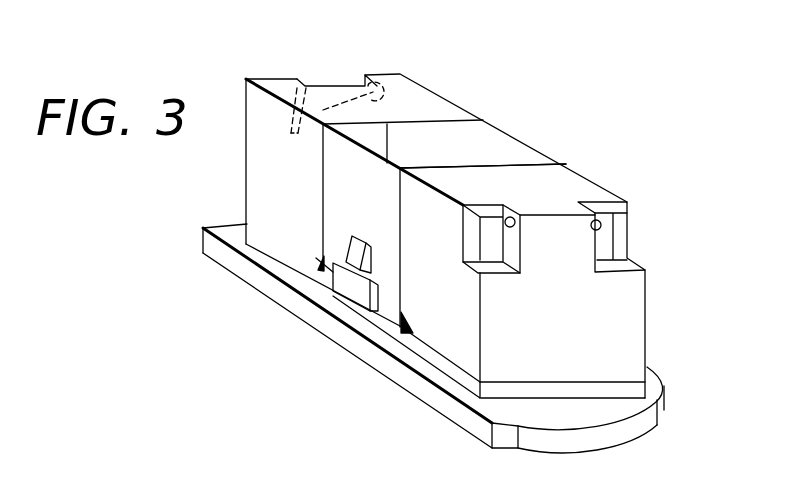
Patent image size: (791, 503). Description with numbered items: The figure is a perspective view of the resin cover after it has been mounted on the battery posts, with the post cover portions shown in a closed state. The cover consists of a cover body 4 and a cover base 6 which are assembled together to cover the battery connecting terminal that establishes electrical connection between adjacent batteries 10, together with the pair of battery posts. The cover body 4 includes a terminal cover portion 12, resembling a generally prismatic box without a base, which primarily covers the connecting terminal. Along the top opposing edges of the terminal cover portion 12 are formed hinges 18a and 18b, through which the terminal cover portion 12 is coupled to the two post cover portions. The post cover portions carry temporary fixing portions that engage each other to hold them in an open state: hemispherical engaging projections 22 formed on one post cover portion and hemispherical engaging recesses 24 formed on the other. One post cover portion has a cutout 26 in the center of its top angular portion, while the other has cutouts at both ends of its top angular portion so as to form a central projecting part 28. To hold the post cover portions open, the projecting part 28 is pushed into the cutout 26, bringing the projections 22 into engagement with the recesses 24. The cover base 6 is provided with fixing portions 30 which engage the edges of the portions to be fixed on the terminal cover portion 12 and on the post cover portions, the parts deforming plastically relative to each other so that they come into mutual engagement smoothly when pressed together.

The cover body 4 is at (531, 138).
The cover base 6 is at (608, 398).
The batteries 10 is at (277, 267).
The terminal cover portion 12 is at (328, 202).
The hinge 18a is at (498, 167).
The hinge 18b is at (386, 163).
The engaging projections 22 is at (597, 233).
The engaging recesses 24 is at (295, 129).
The cutout 26 is at (345, 78).
The projecting part 28 is at (553, 207).
The fixing portions 30 is at (347, 253).